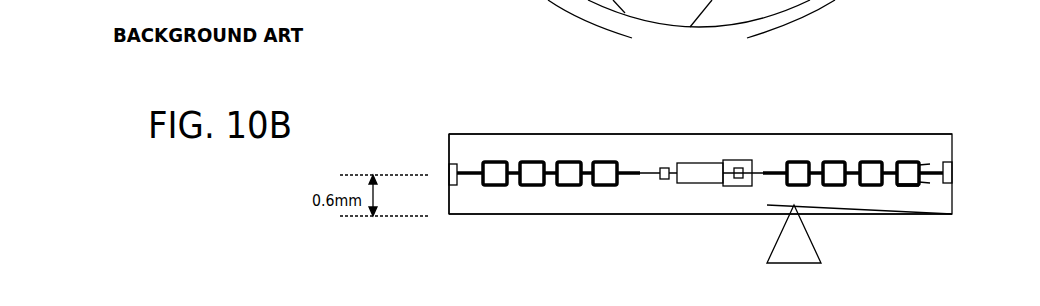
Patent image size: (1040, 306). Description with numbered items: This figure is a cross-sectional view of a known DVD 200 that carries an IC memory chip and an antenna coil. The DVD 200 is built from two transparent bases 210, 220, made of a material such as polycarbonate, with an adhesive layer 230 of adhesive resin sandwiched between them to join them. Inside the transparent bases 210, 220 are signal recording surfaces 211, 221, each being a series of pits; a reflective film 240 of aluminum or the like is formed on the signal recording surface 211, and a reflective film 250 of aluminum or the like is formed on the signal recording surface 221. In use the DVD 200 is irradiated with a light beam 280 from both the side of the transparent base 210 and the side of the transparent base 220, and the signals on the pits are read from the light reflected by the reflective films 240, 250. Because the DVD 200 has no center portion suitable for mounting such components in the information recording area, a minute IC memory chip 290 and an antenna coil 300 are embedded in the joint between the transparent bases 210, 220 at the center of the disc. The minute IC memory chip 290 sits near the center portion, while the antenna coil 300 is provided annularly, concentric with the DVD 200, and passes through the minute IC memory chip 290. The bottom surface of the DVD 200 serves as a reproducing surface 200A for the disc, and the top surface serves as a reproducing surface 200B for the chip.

The DVD 200 is at (858, 133).
The reproducing surface for the disc 200A is at (766, 203).
The reproducing surface for the chip 200B is at (632, 150).
The transparent base 210 is at (945, 137).
The signal recording surface 211 is at (905, 162).
The transparent base 220 is at (942, 205).
The signal recording surface 221 is at (912, 185).
The adhesive layer 230 is at (945, 175).
The reflective film 240 is at (919, 165).
The reflective film 250 is at (919, 182).
The light beam 280 is at (806, 245).
The minute IC memory chip 290 is at (745, 160).
The antenna coil 300 is at (665, 168).